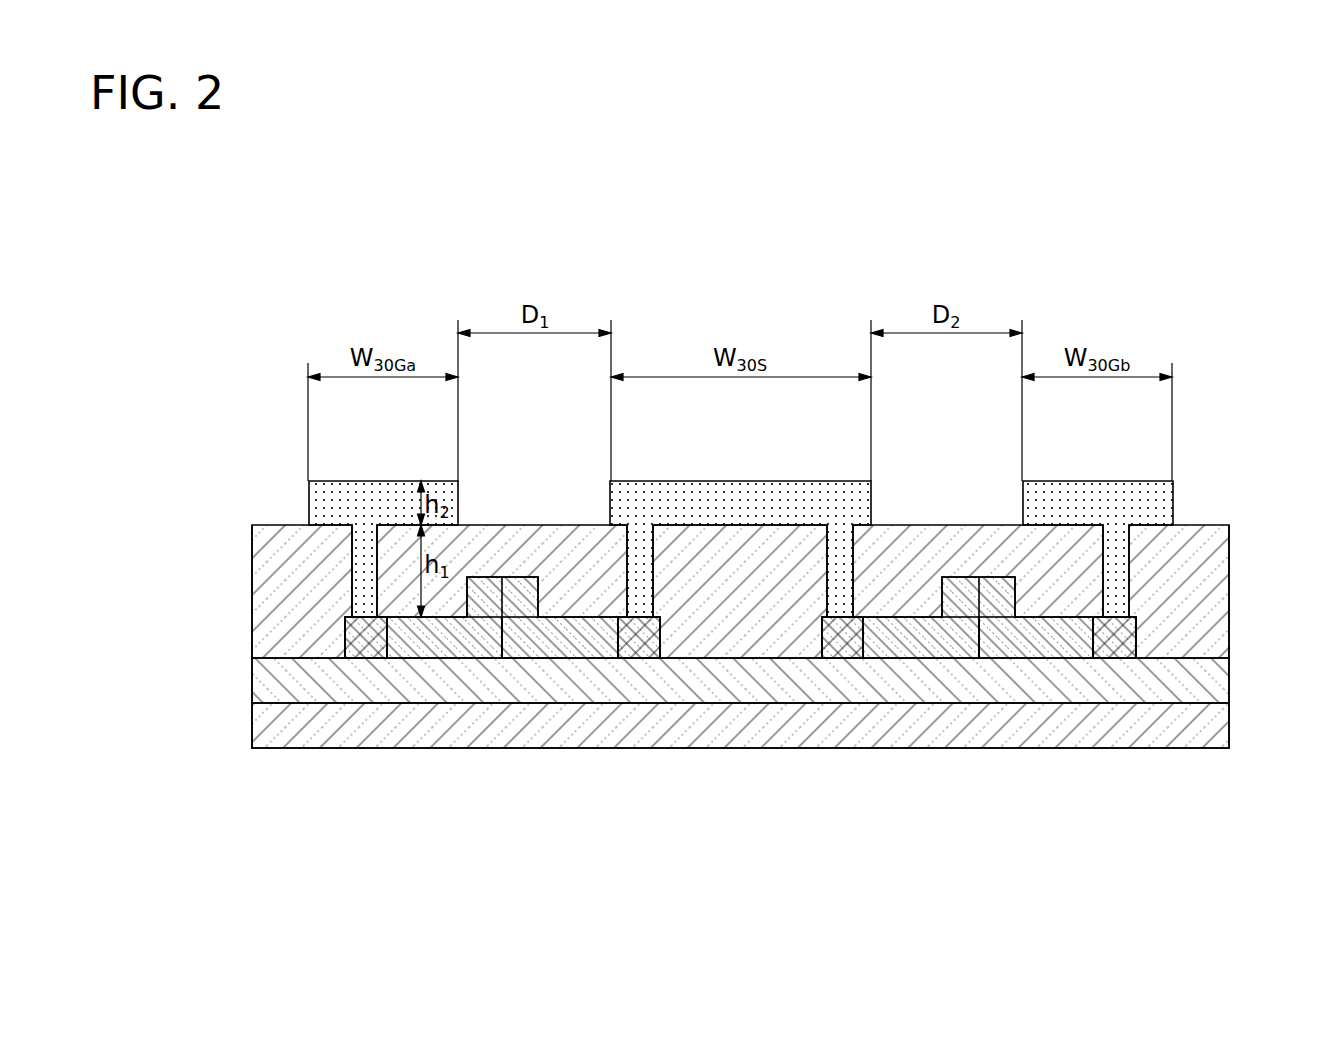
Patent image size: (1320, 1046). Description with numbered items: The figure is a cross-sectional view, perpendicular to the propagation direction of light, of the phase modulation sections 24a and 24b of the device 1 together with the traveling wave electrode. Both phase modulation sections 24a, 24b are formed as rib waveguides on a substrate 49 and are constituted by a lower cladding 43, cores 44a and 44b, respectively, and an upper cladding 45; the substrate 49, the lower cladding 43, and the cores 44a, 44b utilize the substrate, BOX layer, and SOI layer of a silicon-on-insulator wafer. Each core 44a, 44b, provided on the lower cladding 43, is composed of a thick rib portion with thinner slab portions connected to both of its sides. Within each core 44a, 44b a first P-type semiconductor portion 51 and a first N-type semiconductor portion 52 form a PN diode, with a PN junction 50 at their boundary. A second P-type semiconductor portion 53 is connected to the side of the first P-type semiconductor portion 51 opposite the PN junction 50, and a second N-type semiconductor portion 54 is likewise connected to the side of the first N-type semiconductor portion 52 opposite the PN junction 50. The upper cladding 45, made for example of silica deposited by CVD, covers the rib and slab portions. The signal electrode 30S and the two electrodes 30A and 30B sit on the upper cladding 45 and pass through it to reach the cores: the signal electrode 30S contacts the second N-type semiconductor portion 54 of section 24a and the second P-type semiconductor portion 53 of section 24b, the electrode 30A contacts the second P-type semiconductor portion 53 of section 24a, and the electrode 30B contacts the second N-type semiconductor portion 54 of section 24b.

The semiconductor device 1 is at (722, 293).
The phase modulation section 24a is at (516, 428).
The phase modulation section 24b is at (934, 428).
The electrode 30A is at (378, 492).
The signal electrode 30S is at (745, 492).
The electrode 30B is at (1103, 492).
The lower cladding 43 is at (1215, 682).
The core 44a is at (527, 568).
The core 44b is at (980, 566).
The upper cladding 45 is at (278, 568).
The substrate 49 is at (1215, 730).
The PN junction 50 is at (502, 658).
The first P-type semiconductor portion 51 is at (451, 638).
The first N-type semiconductor portion 52 is at (588, 640).
The second P-type semiconductor portion 53 is at (368, 638).
The second N-type semiconductor portion 54 is at (640, 640).